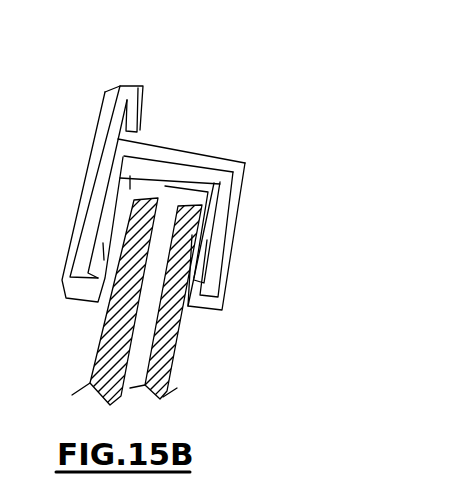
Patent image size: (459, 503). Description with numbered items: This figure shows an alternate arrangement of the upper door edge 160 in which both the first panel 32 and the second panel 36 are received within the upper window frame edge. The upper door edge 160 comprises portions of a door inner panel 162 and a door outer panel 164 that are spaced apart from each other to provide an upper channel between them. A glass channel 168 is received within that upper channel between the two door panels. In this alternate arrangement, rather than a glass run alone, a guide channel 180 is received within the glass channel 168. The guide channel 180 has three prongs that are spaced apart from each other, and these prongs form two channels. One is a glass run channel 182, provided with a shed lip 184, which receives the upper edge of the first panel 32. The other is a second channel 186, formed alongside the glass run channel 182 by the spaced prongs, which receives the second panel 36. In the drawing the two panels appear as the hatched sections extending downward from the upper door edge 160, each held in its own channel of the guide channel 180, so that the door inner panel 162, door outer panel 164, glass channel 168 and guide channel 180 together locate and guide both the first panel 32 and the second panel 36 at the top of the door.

The upper door edge 160 is at (166, 65).
The door inner panel 162 is at (143, 157).
The door outer panel 164 is at (133, 83).
The glass channel 168 is at (170, 161).
The guide channel 180 is at (165, 186).
The first panel 32 is at (160, 198).
The second panel 36 is at (209, 212).
The glass run channel 182 is at (138, 188).
The shed lip 184 is at (107, 322).
The second channel 186 is at (212, 224).